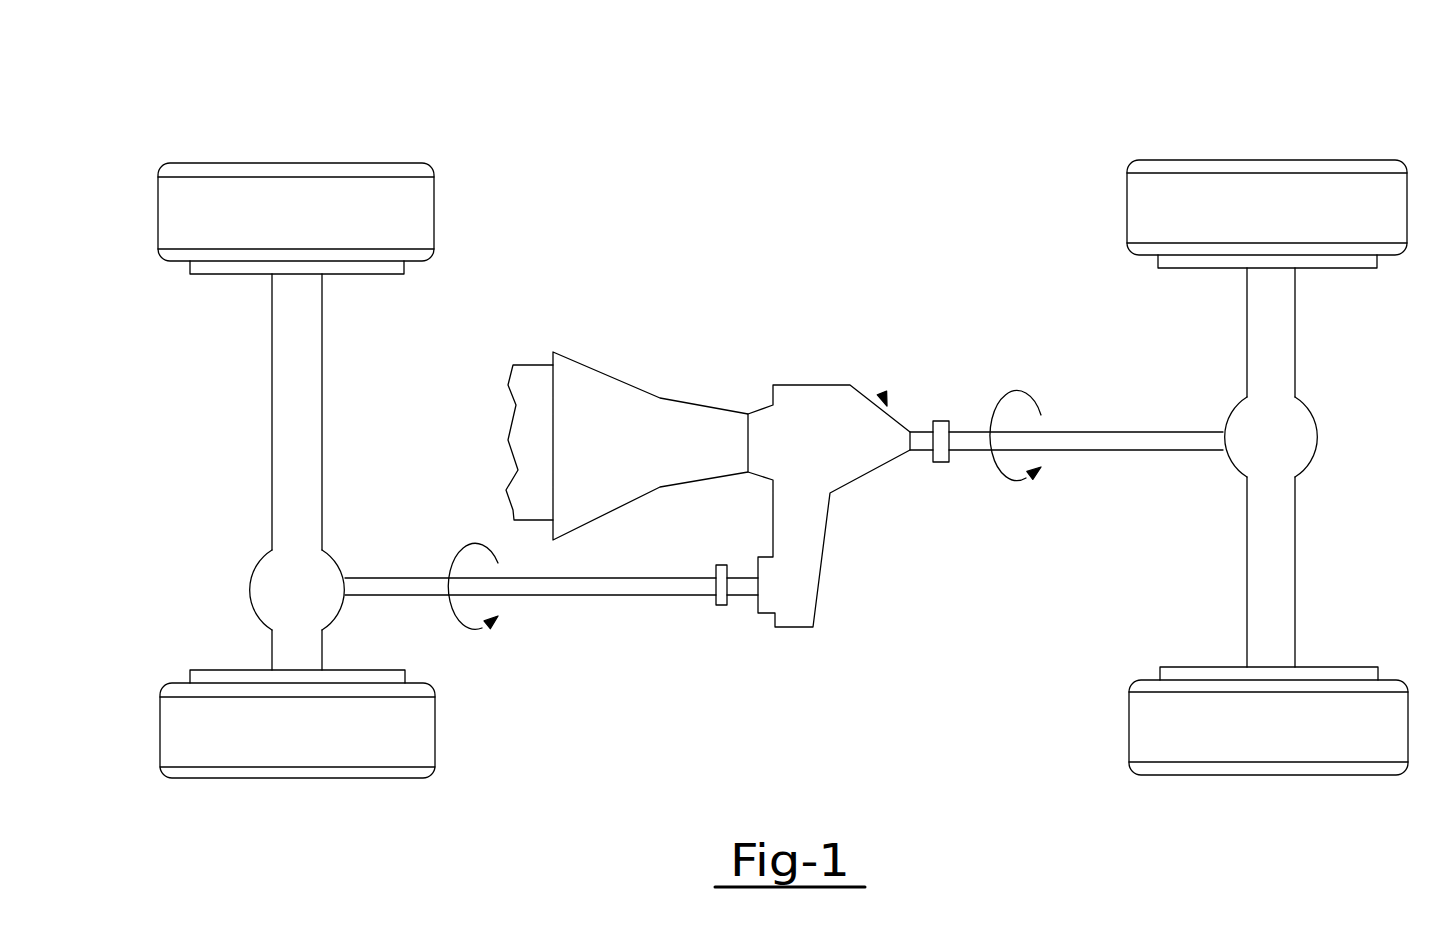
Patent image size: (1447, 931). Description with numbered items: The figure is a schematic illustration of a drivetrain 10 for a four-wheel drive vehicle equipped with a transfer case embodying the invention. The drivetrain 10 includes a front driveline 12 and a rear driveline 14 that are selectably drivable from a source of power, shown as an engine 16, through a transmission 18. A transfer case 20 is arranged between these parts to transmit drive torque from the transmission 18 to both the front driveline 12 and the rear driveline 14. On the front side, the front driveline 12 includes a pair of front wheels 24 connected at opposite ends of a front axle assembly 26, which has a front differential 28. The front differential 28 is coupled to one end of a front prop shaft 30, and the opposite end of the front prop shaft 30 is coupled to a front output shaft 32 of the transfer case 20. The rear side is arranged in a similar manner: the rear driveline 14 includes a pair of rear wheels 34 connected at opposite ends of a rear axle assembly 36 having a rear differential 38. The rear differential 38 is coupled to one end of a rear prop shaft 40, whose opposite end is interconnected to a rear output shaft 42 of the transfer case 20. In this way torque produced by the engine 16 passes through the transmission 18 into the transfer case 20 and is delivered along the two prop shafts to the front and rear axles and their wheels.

The drivetrain 10 is at (942, 138).
The front driveline 12 is at (347, 463).
The rear driveline 14 is at (1150, 390).
The engine 16 is at (528, 413).
The transmission 18 is at (659, 463).
The transfer case 20 is at (870, 482).
The front wheels 24 is at (226, 211).
The front axle assembly 26 is at (292, 353).
The front differential 28 is at (276, 567).
The front prop shaft 30 is at (668, 590).
The front output shaft 32 is at (740, 590).
The rear wheels 34 is at (1207, 223).
The rear axle assembly 36 is at (1263, 320).
The rear differential 38 is at (1288, 430).
The rear prop shaft 40 is at (1152, 440).
The rear output shaft 42 is at (925, 436).